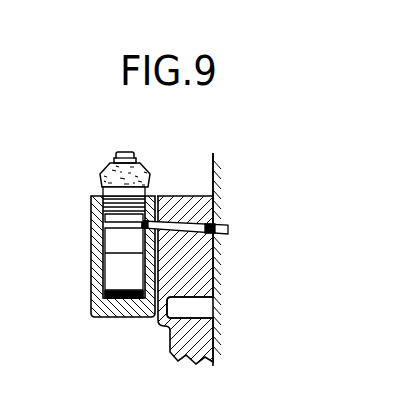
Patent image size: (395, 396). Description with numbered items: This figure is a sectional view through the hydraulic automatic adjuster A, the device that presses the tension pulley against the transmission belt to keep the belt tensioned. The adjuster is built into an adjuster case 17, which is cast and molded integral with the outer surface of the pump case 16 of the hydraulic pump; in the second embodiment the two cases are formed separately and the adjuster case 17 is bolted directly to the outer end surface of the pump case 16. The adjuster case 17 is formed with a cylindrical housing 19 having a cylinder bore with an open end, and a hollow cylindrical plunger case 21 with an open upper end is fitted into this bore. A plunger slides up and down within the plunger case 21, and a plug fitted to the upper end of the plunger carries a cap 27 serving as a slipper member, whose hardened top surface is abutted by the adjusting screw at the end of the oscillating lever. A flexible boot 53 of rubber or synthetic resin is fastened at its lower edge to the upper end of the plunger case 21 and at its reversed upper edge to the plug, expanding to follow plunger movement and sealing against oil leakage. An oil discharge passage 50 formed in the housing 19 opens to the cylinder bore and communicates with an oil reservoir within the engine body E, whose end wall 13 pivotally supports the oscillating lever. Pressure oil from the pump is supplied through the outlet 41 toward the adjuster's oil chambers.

The cap 27 is at (128, 152).
The flexible boot 53 is at (108, 171).
The hydraulic automatic adjuster A is at (153, 181).
The engine body E is at (223, 152).
The end wall 13 is at (220, 173).
The oil discharge passage 50 is at (212, 228).
The cylindrical housing 19 is at (100, 232).
The plunger case 21 is at (113, 270).
The adjuster case 17 is at (107, 312).
The outlet 41 is at (207, 320).
The pump case 16 is at (177, 345).